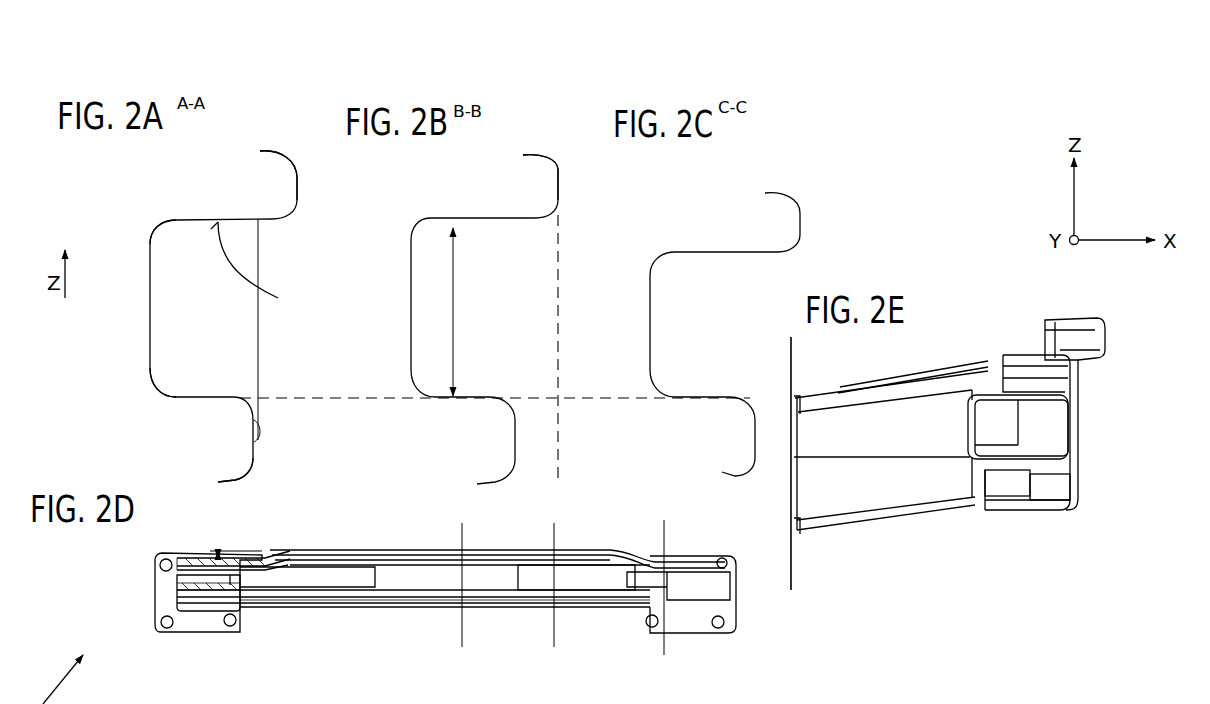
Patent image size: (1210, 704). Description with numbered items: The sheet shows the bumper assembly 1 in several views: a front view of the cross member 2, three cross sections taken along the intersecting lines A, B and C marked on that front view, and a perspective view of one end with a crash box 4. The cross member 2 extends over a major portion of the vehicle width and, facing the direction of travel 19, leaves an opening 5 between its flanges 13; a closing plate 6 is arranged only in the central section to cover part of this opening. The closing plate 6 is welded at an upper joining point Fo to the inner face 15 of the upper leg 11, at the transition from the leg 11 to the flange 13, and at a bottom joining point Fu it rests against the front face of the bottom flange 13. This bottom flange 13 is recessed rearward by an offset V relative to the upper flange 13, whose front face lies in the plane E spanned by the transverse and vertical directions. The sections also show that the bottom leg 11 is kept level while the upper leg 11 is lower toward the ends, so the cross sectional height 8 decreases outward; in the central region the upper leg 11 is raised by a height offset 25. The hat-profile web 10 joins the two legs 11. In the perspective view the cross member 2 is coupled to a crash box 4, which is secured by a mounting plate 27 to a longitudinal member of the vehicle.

In FIG. 2E, the bumper assembly 1 is at (908, 598).
In FIG. 2D, the cross member 2 is at (285, 612).
In FIG. 2E, the crash box 4 is at (915, 490).
In FIG. 2B, the opening 5 is at (492, 298).
In FIG. 2C, the opening 5 is at (707, 319).
In FIG. 2D, the opening 5 is at (341, 580).
In FIG. 2E, the opening 5 is at (1052, 436).
In FIG. 2A, the closing plate 6 is at (261, 362).
In FIG. 2D, the closing plate 6 is at (421, 590).
In FIG. 2E, the closing plate 6 is at (1079, 408).
In FIG. 2B, the cross sectional height 8 is at (447, 312).
In FIG. 2A, the web 10 is at (149, 310).
In FIG. 2A, the leg 11 is at (176, 219).
In FIG. 2A, the flange 13 is at (300, 181).
In FIG. 2B, the flange 13 is at (540, 154).
In FIG. 2A, the inner face 15 is at (265, 288).
In FIG. 2B, the direction of travel 19 is at (615, 305).
In FIG. 2D, the height offset 25 is at (262, 548).
In FIG. 2E, the mounting plate 27 is at (794, 568).
In FIG. 2A, the upper joining point Fo is at (272, 230).
In FIG. 2D, the upper joining point Fo is at (438, 560).
In FIG. 2A, the bottom joining point Fu is at (262, 436).
In FIG. 2D, the bottom joining point Fu is at (441, 608).
In FIG. 2B, the plane E is at (562, 235).
In FIG. 2B, the offset V is at (558, 452).
In FIG. 2D, the intersecting line A- A is at (463, 589).
In FIG. 2D, the intersecting line B- B is at (555, 589).
In FIG. 2D, the intersecting line C- C is at (665, 589).